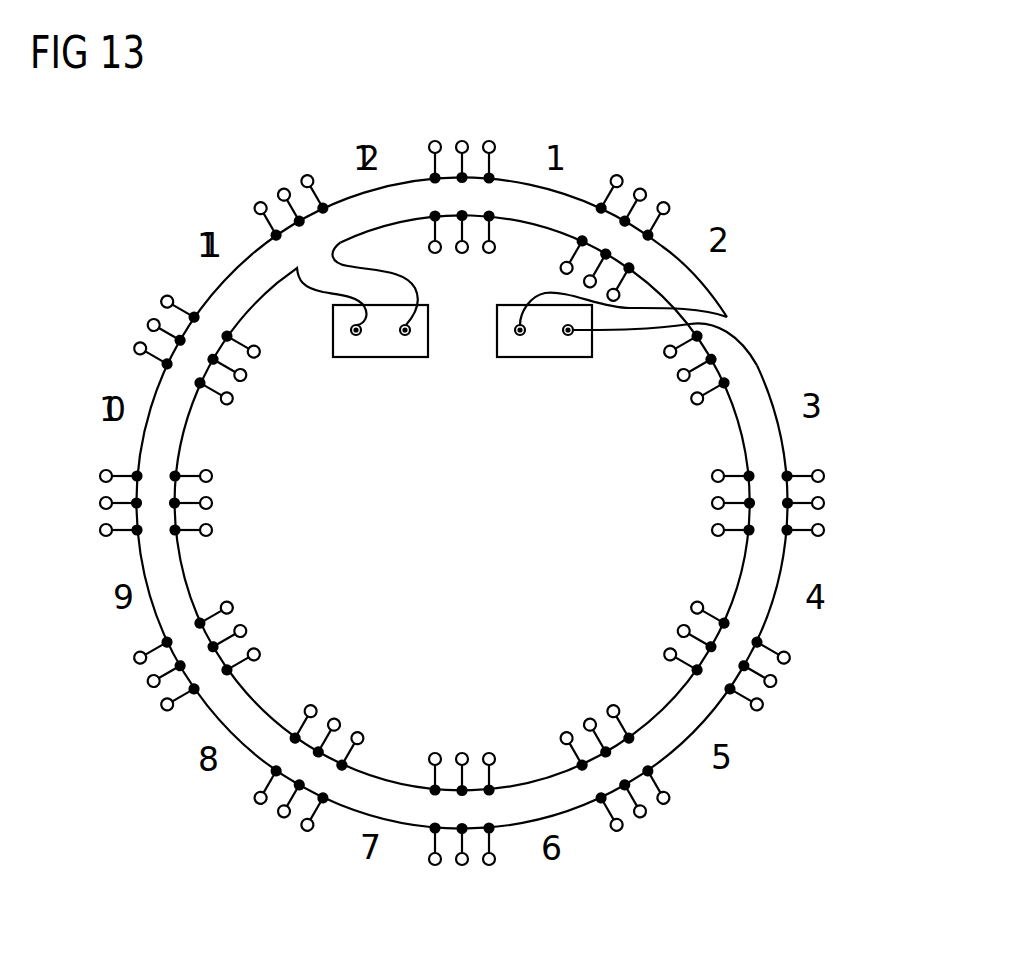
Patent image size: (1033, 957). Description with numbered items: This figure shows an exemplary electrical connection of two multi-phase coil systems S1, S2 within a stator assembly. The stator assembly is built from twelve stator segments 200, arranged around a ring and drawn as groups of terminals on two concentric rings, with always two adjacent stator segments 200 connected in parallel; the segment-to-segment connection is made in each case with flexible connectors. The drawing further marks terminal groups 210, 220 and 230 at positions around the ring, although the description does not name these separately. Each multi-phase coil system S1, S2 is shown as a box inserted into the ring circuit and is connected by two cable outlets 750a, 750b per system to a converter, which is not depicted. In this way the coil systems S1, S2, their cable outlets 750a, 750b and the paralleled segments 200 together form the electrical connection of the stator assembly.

The stator segment 200 is at (265, 182).
The first phase terminal group 210 is at (270, 835).
The second phase terminal group 220 is at (660, 833).
The third phase terminal group 230 is at (127, 697).
The cable outlet 750a is at (405, 361).
The cable outlet 750b is at (627, 355).
The multi-phase coil system S1 is at (446, 383).
The multi-phase coil system S2 is at (610, 383).